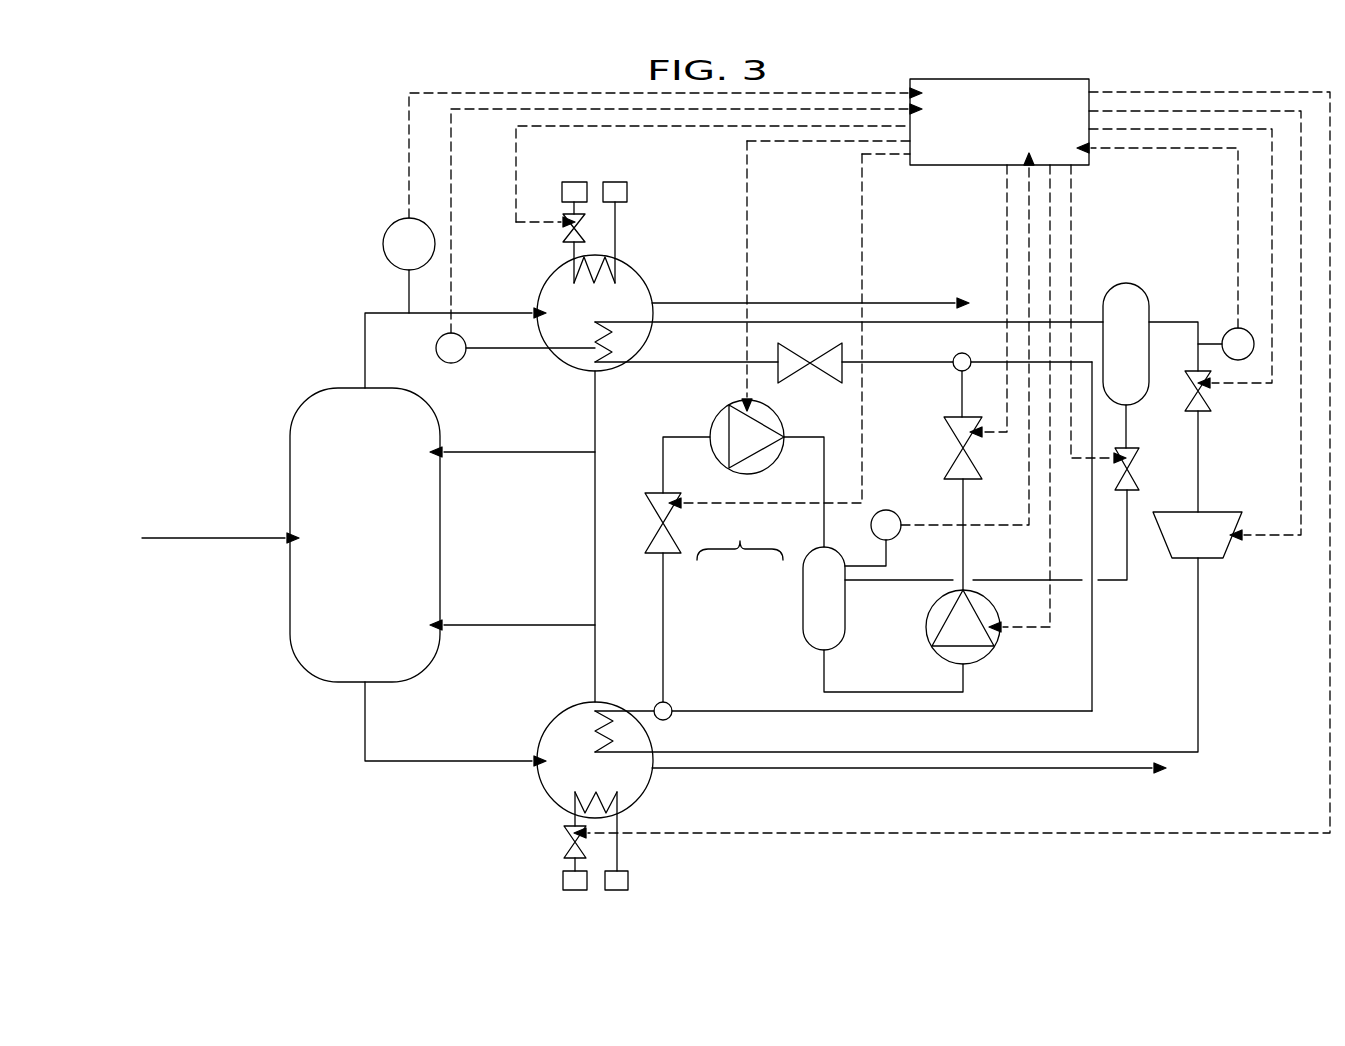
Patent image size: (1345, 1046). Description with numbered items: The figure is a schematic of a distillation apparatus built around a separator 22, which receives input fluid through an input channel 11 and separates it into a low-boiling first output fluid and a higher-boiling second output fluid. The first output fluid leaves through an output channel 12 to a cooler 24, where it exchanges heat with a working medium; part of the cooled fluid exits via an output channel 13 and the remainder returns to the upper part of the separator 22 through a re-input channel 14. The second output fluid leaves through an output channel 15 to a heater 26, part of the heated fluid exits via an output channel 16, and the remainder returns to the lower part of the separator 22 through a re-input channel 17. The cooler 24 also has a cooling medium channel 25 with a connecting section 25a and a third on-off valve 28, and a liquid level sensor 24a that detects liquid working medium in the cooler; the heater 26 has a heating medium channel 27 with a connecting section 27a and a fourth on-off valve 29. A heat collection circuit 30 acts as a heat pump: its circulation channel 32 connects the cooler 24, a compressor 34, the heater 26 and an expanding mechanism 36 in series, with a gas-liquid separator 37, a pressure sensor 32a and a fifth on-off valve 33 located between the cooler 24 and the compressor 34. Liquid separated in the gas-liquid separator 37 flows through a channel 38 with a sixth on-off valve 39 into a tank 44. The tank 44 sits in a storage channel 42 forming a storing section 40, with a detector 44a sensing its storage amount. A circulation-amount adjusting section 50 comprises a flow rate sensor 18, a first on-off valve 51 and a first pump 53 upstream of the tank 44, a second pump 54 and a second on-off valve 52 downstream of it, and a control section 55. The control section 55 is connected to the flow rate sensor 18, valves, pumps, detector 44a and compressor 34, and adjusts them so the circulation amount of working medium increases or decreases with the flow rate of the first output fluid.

The input channel 11 is at (203, 537).
The output channel 12 is at (365, 328).
The output channel 13 is at (923, 303).
The re-input channel 14 is at (541, 452).
The output channel 15 is at (365, 748).
The output channel 16 is at (922, 768).
The re-input channel 17 is at (488, 625).
The flow rate sensor 18 is at (397, 226).
The separator 22 is at (300, 410).
The cooler 24 is at (550, 282).
The liquid level sensor 24a is at (455, 364).
The cooling medium channel 25 is at (616, 250).
The connecting section 25a is at (628, 190).
The heater 26 is at (548, 806).
The heating medium channel 27 is at (618, 823).
The connecting section 27a is at (628, 880).
The third on-off valve 28 is at (563, 230).
The fourth on-off valve 29 is at (563, 840).
The heat collection circuit 30 is at (1215, 670).
The circulation channel 32 is at (1200, 485).
The pressure sensor 32a is at (1230, 330).
The fifth on-off valve 33 is at (1210, 400).
The compressor 34 is at (1205, 560).
The expanding mechanism 36 is at (818, 383).
The gas-liquid separator 37 is at (1130, 283).
The channel 38 is at (1128, 425).
The sixth on-off valve 39 is at (1140, 478).
The storing section 40 is at (740, 538).
The storage channel 42 is at (700, 615).
The tank 44 is at (798, 612).
The detector 44a is at (891, 510).
The circulation-amount adjusting section 50 is at (869, 462).
The first on-off valve 51 is at (644, 528).
The second on-off valve 52 is at (950, 428).
The first pump 53 is at (712, 420).
The second pump 54 is at (980, 660).
The control section 55 is at (1000, 79).